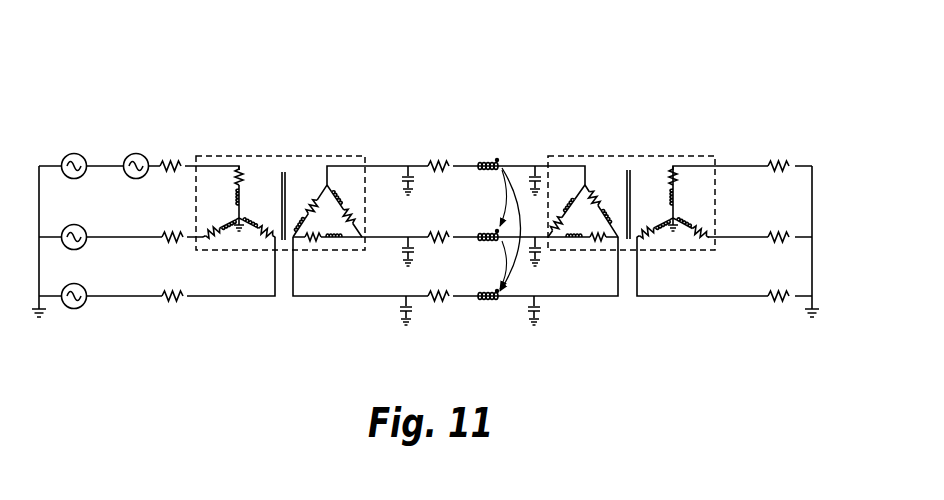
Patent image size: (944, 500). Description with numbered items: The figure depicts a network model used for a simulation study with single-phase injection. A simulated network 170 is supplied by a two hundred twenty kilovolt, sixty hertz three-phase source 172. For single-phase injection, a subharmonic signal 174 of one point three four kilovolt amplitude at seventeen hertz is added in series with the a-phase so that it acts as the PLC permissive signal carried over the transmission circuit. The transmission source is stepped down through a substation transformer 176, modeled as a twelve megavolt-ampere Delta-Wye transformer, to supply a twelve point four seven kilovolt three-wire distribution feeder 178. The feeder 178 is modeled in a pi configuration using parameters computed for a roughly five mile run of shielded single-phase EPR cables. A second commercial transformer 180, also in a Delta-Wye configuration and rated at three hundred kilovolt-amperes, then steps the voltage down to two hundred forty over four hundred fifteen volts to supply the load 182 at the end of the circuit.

The simulated network 170 is at (350, 344).
The source 172 is at (53, 68).
The subharmonic signal 174 is at (152, 45).
The substation transformer 176 is at (308, 65).
The distribution feeder 178 is at (436, 117).
The commercial transformer 180 is at (649, 71).
The load 182 is at (797, 120).